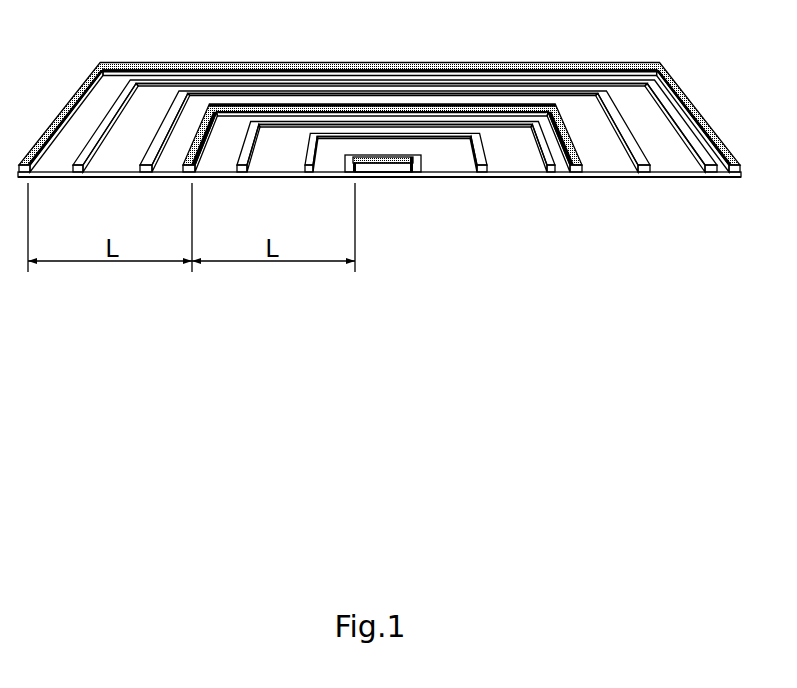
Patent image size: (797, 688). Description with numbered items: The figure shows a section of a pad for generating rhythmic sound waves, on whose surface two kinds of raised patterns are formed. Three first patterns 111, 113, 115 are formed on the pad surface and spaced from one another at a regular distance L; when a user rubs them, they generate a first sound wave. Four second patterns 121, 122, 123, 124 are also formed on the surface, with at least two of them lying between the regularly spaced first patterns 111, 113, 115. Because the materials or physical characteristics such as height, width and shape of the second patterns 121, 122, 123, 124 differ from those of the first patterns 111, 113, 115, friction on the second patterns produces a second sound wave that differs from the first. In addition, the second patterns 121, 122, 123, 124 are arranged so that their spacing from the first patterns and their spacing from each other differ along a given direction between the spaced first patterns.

The first pattern 111 is at (415, 163).
The first pattern 113 is at (257, 108).
The first pattern 115 is at (62, 120).
The second pattern 121 is at (357, 137).
The second pattern 122 is at (292, 125).
The second pattern 123 is at (173, 112).
The second pattern 124 is at (127, 107).